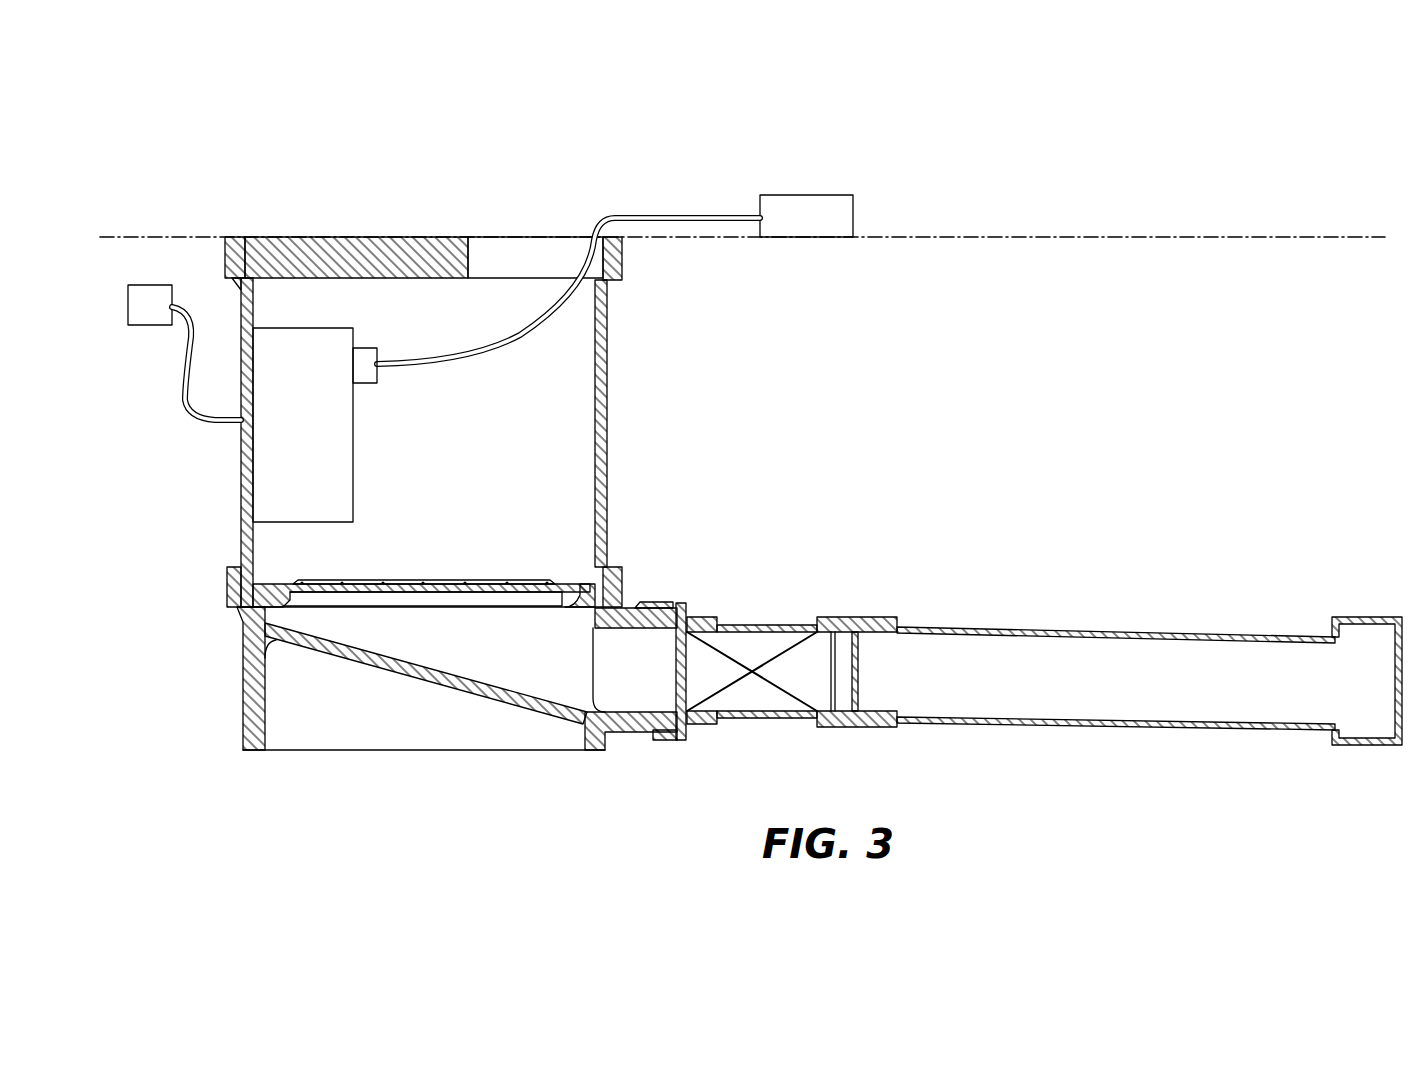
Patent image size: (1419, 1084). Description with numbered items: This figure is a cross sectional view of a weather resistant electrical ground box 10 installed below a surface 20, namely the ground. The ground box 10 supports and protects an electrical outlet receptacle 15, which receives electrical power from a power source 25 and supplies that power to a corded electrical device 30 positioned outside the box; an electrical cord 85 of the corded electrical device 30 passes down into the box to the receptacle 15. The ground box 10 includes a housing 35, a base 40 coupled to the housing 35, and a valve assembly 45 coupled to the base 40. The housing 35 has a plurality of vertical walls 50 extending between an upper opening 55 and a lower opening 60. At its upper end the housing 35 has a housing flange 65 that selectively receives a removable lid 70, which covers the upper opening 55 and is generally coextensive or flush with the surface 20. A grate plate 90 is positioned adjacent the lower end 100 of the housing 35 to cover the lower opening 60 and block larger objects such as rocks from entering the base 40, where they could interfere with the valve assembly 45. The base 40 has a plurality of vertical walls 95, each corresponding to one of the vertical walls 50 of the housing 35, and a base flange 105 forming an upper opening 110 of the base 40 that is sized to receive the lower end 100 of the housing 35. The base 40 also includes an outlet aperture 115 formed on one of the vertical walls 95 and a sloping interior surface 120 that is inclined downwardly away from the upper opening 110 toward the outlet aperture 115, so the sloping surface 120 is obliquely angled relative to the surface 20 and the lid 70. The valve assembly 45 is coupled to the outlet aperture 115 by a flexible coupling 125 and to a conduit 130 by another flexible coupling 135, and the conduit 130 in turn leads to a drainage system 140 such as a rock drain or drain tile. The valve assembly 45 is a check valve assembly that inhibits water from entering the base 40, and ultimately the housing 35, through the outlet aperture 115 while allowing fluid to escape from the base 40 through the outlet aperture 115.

The electrical ground box 10 is at (803, 437).
The electrical outlet receptacle 15 is at (298, 522).
The surface 20 is at (1113, 232).
The power source 25 is at (156, 327).
The corded electrical device 30 is at (821, 195).
The housing 35 is at (605, 388).
The base 40 is at (243, 702).
The valve assembly 45 is at (763, 623).
The vertical walls 50 is at (243, 312).
The upper opening 55 is at (238, 230).
The lower opening 60 is at (574, 551).
The housing flange 65 is at (622, 257).
The lid 70 is at (395, 258).
The electrical cord 85 is at (710, 212).
The grate plate 90 is at (268, 640).
The vertical walls 95 is at (263, 735).
The lower end 100 is at (235, 590).
The base flange 105 is at (624, 583).
The upper opening 110 is at (529, 536).
The outlet aperture 115 is at (653, 722).
The sloping interior surface 120 is at (445, 668).
The flexible coupling 125 is at (700, 725).
The conduit 130 is at (1133, 630).
The flexible coupling 135 is at (880, 617).
The drainage system 140 is at (1372, 617).